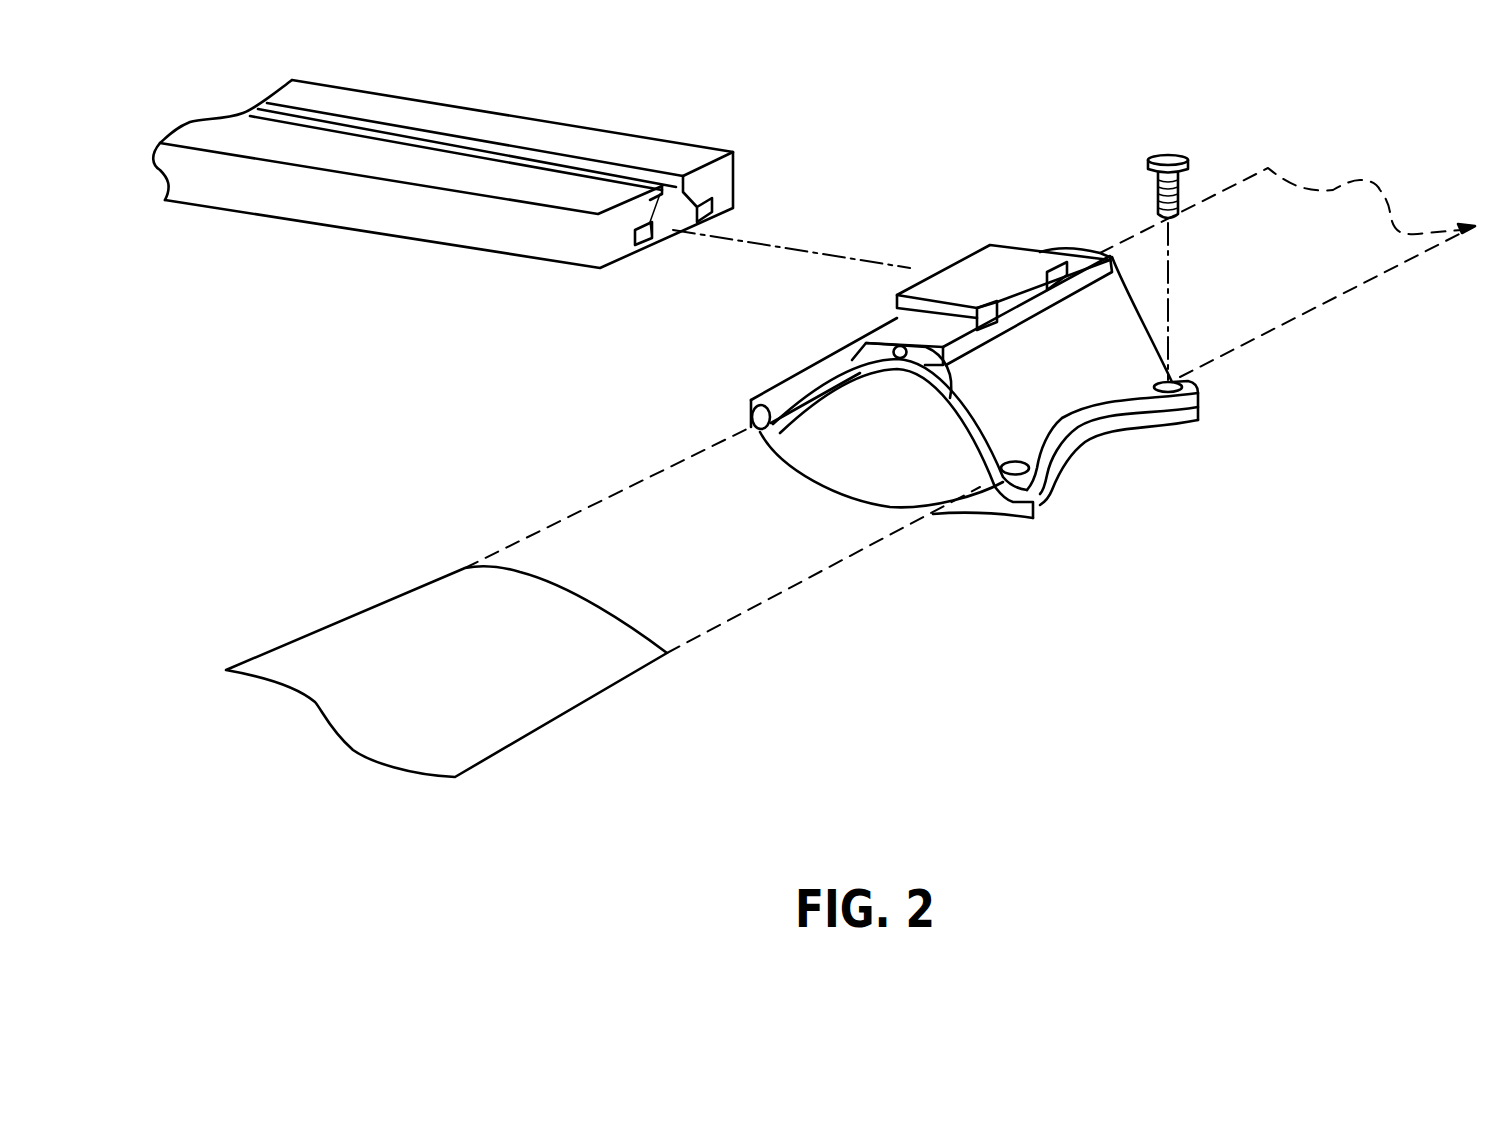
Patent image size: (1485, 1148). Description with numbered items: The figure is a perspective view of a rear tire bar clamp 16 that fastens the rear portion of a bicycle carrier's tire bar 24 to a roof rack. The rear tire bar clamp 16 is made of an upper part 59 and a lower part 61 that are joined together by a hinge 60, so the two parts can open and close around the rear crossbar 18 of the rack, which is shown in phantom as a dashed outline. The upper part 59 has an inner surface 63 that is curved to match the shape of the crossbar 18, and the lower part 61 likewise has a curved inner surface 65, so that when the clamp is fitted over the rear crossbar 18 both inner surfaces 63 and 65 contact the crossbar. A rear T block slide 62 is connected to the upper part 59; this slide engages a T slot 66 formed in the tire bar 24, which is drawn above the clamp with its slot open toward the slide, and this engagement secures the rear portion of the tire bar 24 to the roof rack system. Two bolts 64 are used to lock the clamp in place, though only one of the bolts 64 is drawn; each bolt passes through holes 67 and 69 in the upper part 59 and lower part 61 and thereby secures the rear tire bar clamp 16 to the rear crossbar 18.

The rear tire bar clamp 16 is at (755, 493).
The rear crossbar 18 is at (597, 700).
The tire bar 24 is at (420, 245).
The upper part 59 is at (838, 356).
The hinge 60 is at (751, 403).
The lower part 61 is at (950, 507).
The rear T block slide 62 is at (995, 245).
The inner surface 63 is at (903, 370).
The bolt 64 is at (1186, 157).
The inner surface 65 is at (888, 470).
The T slot 66 is at (658, 228).
The hole 67 is at (1017, 461).
The hole 69 is at (1166, 379).